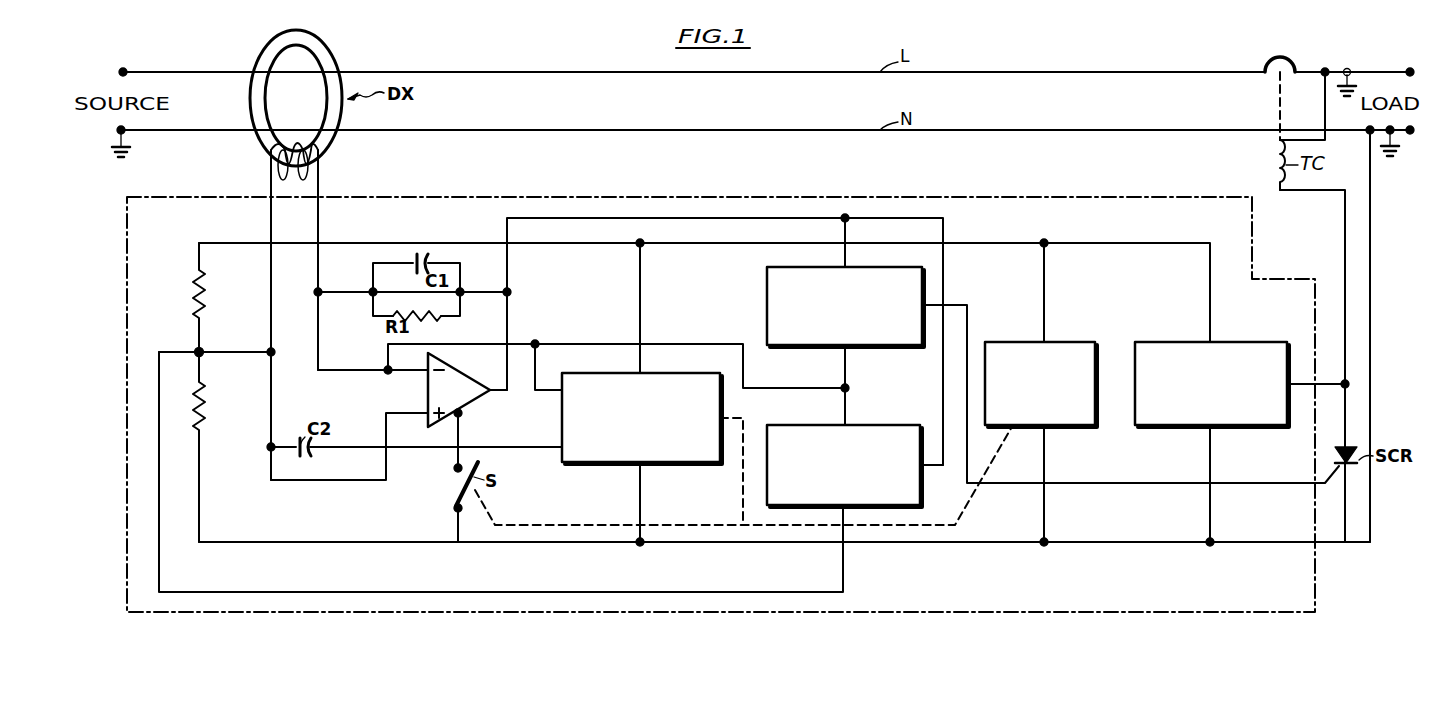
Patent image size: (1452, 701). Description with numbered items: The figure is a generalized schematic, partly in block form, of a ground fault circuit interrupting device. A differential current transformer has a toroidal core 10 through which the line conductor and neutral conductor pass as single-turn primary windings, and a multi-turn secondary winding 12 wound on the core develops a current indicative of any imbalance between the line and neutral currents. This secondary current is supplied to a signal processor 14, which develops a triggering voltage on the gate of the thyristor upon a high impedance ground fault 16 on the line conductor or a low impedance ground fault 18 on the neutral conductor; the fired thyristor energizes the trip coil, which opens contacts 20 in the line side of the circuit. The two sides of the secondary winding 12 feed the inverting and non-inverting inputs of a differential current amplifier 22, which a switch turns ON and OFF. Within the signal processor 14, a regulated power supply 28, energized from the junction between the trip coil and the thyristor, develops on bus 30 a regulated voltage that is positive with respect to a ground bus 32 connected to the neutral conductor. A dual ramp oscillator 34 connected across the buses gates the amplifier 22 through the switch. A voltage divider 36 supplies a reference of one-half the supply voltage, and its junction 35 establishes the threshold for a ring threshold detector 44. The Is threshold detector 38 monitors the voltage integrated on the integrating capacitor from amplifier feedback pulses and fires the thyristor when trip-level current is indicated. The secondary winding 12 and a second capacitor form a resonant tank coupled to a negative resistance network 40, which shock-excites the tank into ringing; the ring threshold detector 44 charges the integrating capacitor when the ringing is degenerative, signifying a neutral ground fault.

The toroidal core 10 is at (322, 70).
The secondary winding 12 is at (318, 172).
The signal processor 14 is at (690, 198).
The high impedance ground fault 16 is at (1340, 100).
The low impedance ground fault 18 is at (1398, 160).
The contacts 20 is at (1270, 60).
The differential current amplifier 22 is at (467, 397).
The regulated power supply 28 is at (1240, 342).
The bus 30 is at (980, 243).
The ground bus 32 is at (1125, 545).
The dual ramp oscillator 34 is at (1059, 342).
The junction 35 is at (202, 350).
The voltage divider 36 is at (190, 335).
The Is threshold detector 38 is at (767, 293).
The negative resistance network 40 is at (662, 371).
The ring threshold detector 44 is at (872, 424).